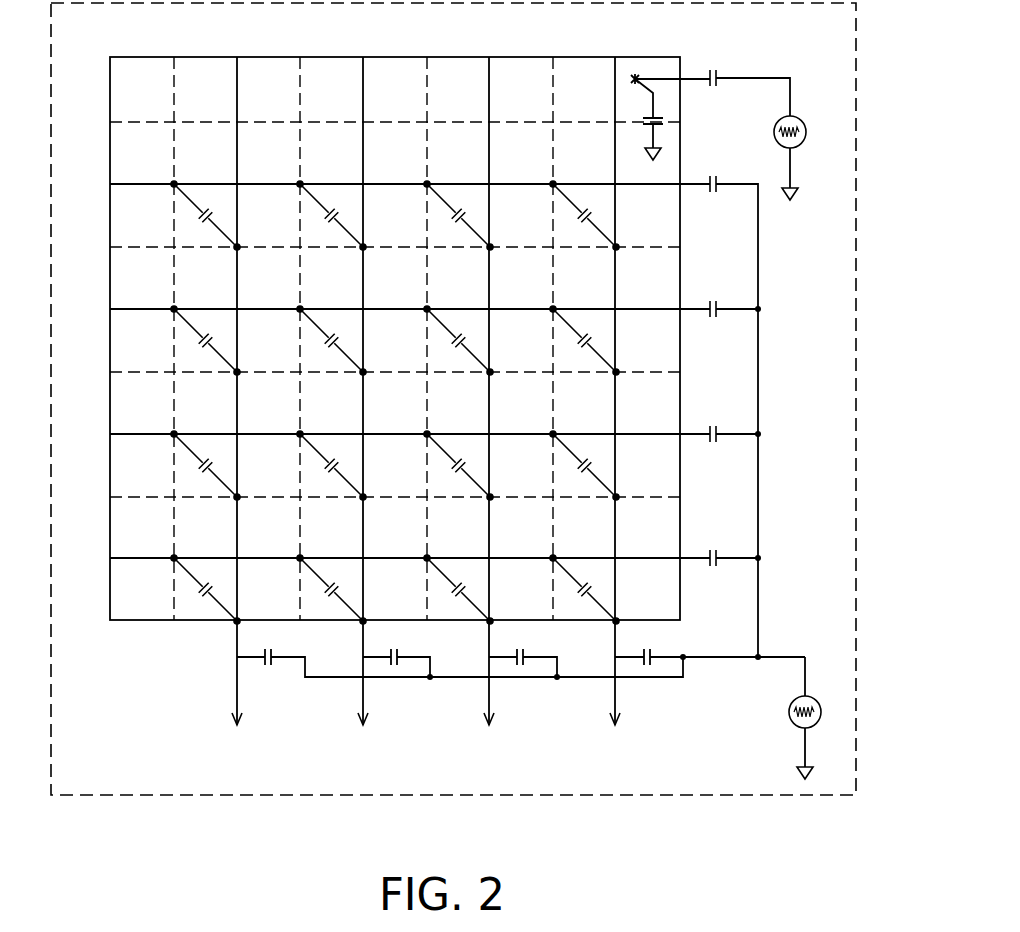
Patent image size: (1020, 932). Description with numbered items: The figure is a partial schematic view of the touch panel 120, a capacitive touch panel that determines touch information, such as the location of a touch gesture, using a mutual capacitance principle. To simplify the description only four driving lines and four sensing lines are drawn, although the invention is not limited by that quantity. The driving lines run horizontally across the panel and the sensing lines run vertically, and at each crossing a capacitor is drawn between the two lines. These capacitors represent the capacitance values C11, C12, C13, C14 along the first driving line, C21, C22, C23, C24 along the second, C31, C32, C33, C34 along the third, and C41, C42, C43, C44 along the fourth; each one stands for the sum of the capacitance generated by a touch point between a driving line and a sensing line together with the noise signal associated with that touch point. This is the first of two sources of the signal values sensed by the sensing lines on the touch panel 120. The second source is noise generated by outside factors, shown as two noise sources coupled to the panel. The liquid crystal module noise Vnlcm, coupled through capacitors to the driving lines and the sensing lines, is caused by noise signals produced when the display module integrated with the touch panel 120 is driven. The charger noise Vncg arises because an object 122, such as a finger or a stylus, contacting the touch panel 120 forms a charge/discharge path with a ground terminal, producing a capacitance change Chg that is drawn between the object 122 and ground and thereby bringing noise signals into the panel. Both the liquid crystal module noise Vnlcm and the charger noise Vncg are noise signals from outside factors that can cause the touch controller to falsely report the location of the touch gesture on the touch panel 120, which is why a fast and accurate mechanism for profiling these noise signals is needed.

The touch panel 120 is at (453, 424).
The object 122 is at (637, 77).
The capacitance change Chg is at (677, 119).
The charger noise Vncg is at (777, 135).
The liquid crystal module noise Vnlcm is at (778, 718).
The capacitance value C11 is at (205, 215).
The capacitance value C12 is at (331, 215).
The capacitance value C13 is at (458, 215).
The capacitance value C14 is at (584, 215).
The capacitance value C21 is at (205, 340).
The capacitance value C22 is at (331, 340).
The capacitance value C23 is at (458, 340).
The capacitance value C24 is at (584, 340).
The capacitance value C31 is at (205, 465).
The capacitance value C32 is at (331, 465).
The capacitance value C33 is at (458, 465).
The capacitance value C34 is at (584, 465).
The capacitance value C41 is at (205, 589).
The capacitance value C42 is at (331, 589).
The capacitance value C43 is at (458, 589).
The capacitance value C44 is at (584, 589).